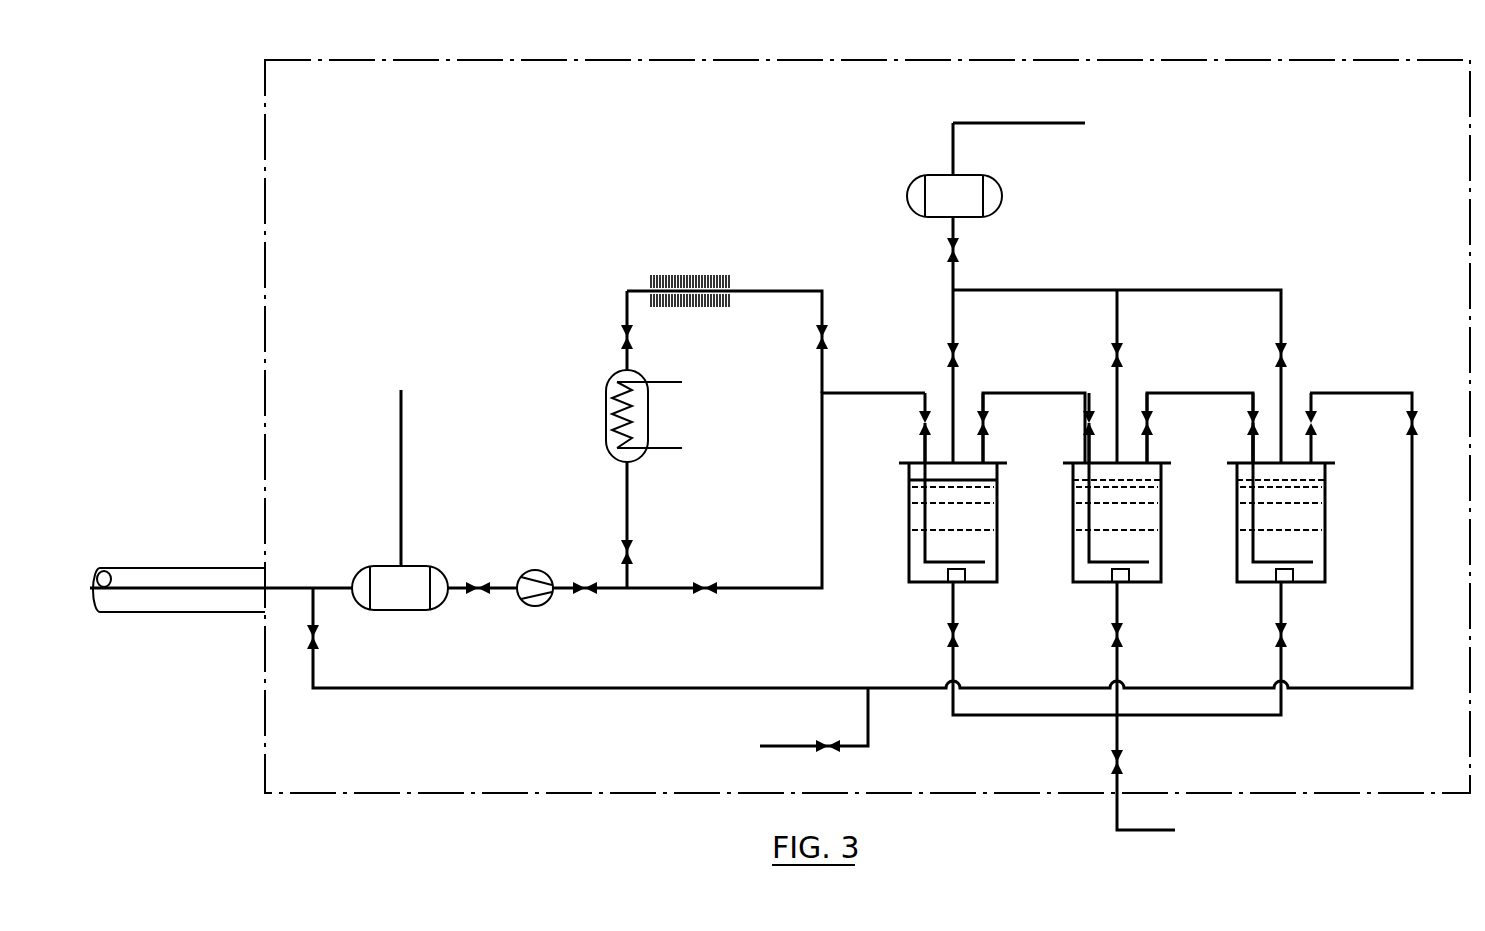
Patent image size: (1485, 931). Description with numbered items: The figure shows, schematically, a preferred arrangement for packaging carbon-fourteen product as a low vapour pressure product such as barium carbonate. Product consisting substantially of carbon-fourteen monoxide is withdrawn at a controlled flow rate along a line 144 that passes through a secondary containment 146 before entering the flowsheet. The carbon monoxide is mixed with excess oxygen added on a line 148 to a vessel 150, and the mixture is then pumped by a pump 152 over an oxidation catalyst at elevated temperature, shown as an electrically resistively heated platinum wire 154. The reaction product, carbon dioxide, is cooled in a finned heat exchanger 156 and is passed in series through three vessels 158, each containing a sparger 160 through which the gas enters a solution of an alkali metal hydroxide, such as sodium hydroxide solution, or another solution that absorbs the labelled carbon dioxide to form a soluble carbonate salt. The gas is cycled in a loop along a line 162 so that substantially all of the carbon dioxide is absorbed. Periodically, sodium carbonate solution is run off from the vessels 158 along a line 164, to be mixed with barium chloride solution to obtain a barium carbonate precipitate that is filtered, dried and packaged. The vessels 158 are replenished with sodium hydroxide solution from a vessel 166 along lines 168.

The line 144 is at (190, 594).
The secondary containment 146 is at (180, 566).
The line 148 is at (402, 493).
The vessel 150 is at (408, 611).
The pump 152 is at (543, 606).
The electrically resistively heated platinum wire 154 is at (606, 412).
The finned heat exchanger 156 is at (732, 286).
The vessels 158 is at (909, 534).
The sparger 160 is at (940, 568).
The line 162 is at (680, 687).
The line 164 is at (1120, 785).
The vessel 166 is at (1002, 196).
The lines 168 is at (954, 322).